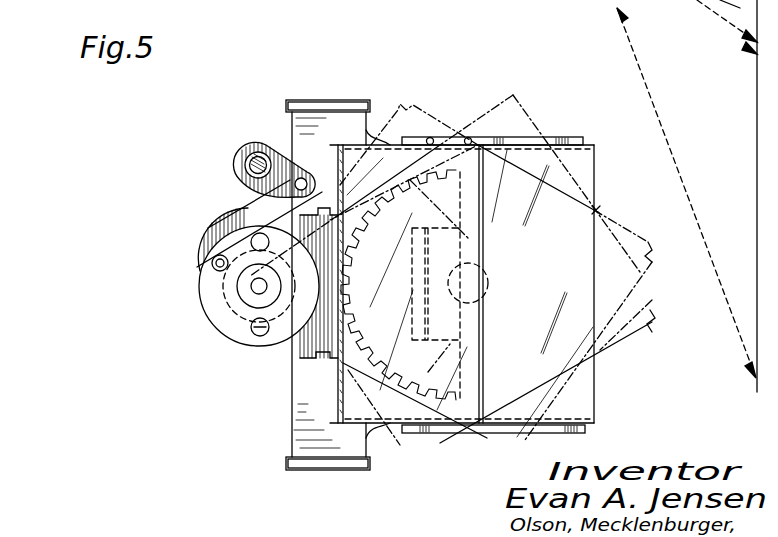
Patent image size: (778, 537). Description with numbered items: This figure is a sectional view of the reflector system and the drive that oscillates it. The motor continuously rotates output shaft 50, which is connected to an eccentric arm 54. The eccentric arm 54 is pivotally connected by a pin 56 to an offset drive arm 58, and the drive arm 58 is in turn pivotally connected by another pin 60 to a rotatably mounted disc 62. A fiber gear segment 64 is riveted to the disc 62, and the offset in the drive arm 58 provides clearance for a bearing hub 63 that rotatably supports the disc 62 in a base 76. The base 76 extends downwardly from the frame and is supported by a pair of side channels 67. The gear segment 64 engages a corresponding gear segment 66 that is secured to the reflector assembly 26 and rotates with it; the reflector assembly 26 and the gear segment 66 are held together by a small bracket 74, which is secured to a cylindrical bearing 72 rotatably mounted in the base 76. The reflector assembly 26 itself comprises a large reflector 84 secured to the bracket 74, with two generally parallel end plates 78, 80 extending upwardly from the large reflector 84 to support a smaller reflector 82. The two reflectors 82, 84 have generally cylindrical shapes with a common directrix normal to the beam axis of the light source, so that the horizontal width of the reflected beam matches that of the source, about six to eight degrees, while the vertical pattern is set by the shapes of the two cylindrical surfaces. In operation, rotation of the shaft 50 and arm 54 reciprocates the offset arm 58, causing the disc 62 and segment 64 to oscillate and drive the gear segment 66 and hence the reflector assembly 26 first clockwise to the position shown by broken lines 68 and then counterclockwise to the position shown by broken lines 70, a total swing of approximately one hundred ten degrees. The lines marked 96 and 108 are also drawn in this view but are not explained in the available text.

The reflector assembly 26 is at (554, 136).
The output shaft 50 is at (246, 158).
The eccentric arm 54 is at (266, 142).
The pin 56 is at (303, 178).
The offset drive arm 58 is at (226, 240).
The pin 60 is at (212, 263).
The disc 62 is at (222, 298).
The bearing hub 63 is at (248, 322).
The fiber gear segment 64 is at (296, 352).
The gear segment 66 is at (470, 198).
The side channels 67 is at (385, 100).
The broken lines 68 is at (632, 336).
The broken lines 70 is at (412, 102).
The cylindrical bearing 72 is at (484, 284).
The bracket 74 is at (480, 330).
The base 76 is at (310, 405).
The end plate 78 is at (585, 432).
The end plate 80 is at (586, 136).
The smaller reflector 82 is at (597, 212).
The large reflector 84 is at (480, 398).
The guide arrow 96 is at (700, 4).
The guide line 108 is at (704, 250).